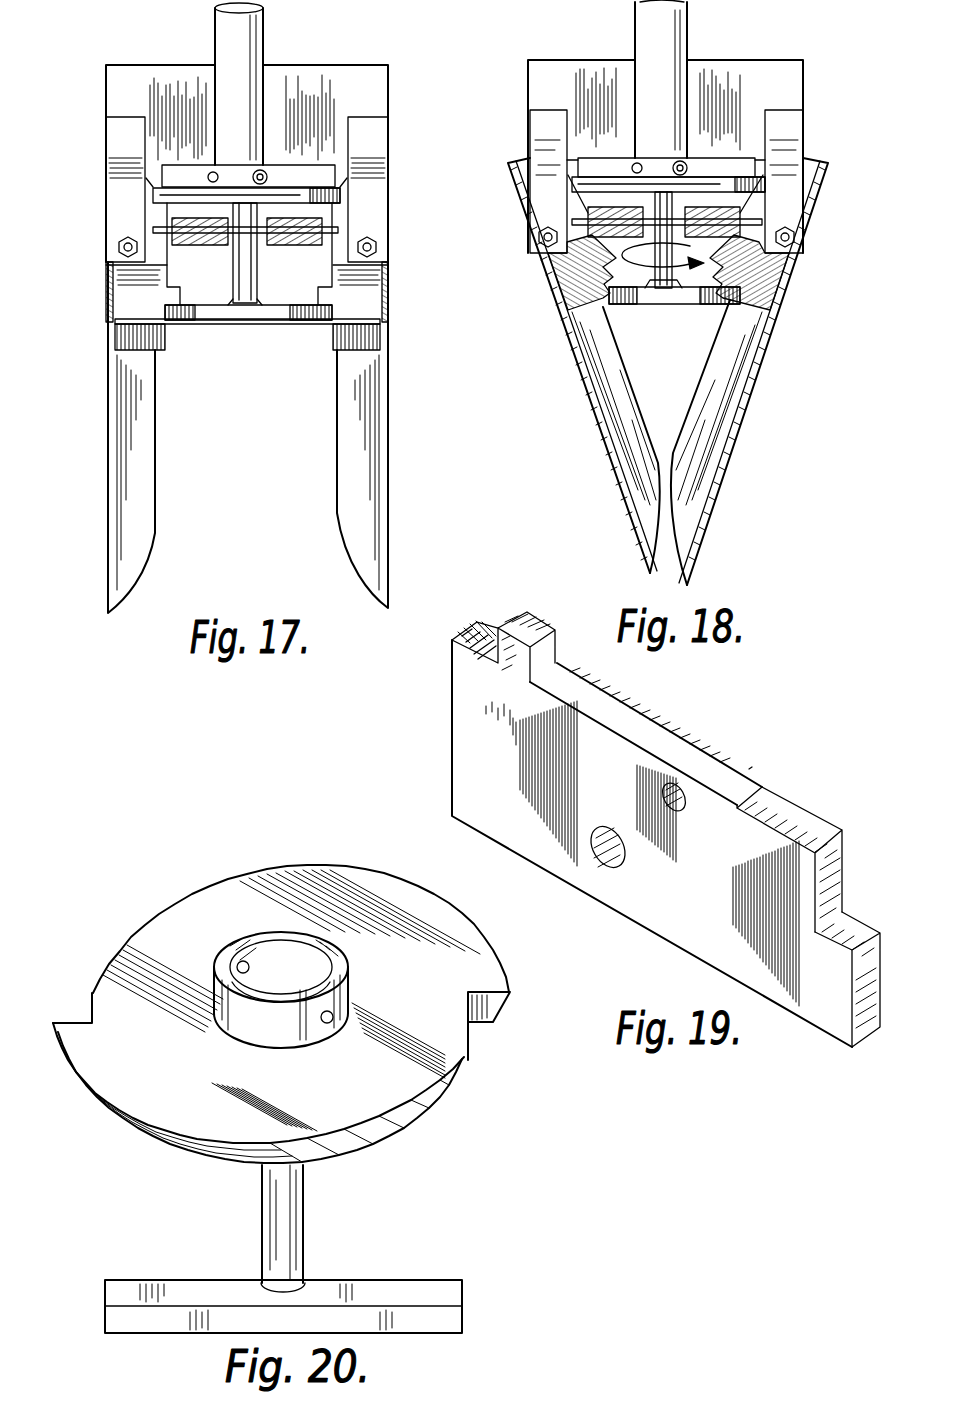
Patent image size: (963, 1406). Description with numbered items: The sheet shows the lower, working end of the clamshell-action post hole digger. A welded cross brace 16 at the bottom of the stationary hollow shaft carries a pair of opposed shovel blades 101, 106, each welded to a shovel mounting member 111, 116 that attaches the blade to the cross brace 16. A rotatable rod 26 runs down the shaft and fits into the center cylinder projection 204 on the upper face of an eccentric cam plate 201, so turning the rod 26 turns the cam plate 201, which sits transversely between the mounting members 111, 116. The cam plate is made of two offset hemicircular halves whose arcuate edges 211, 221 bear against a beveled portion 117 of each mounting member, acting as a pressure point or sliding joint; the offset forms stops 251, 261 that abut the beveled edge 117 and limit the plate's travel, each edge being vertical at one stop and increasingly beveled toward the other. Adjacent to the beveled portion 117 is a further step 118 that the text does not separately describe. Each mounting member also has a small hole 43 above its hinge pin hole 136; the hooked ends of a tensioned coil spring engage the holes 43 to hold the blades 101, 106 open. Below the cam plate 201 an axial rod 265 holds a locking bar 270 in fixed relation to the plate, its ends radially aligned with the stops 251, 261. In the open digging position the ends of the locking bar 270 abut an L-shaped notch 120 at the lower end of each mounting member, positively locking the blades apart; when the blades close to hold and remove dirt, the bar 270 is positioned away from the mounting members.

In FIG. 17, the welded cross brace 16 is at (106, 78).
In FIG. 18, the welded cross brace 16 is at (665, 156).
In FIG. 17, the rotatable rod 26 is at (215, 20).
In FIG. 18, the rotatable rod 26 is at (661, 79).
In FIG. 17, the center cylinder projection 204 is at (240, 176).
In FIG. 18, the center cylinder projection 204 is at (666, 167).
In FIG. 20, the center cylinder projection 204 is at (230, 943).
In FIG. 17, the eccentric cam plate 201 is at (305, 192).
In FIG. 18, the eccentric cam plate 201 is at (755, 160).
In FIG. 20, the eccentric cam plate 201 is at (286, 1008).
In FIG. 17, the axial rod 265 is at (246, 304).
In FIG. 18, the axial rod 265 is at (667, 240).
In FIG. 20, the axial rod 265 is at (262, 1228).
In FIG. 17, the L-shaped notch 120 is at (333, 310).
In FIG. 18, the L-shaped notch 120 is at (740, 300).
In FIG. 19, the L-shaped notch 120 is at (475, 600).
In FIG. 17, the locking bar 270 is at (305, 324).
In FIG. 18, the locking bar 270 is at (695, 303).
In FIG. 20, the locking bar 270 is at (462, 1305).
In FIG. 17, the shovel blade 101 is at (108, 520).
In FIG. 18, the shovel blade 101 is at (630, 525).
In FIG. 17, the shovel blade 106 is at (390, 498).
In FIG. 18, the shovel blade 106 is at (700, 530).
In FIG. 18, the shovel mounting member 111 is at (520, 200).
In FIG. 19, the shovel mounting member 111 is at (652, 829).
In FIG. 18, the shovel mounting member 116 is at (805, 182).
In FIG. 19, the shovel mounting member 116 is at (752, 767).
In FIG. 19, the small hole 43 is at (672, 785).
In FIG. 19, the beveled portion 117 is at (808, 824).
In FIG. 19, the lower shoulder 118 is at (850, 931).
In FIG. 19, the hinge pin hole 136 is at (600, 870).
In FIG. 20, the arcuate edge 221 is at (347, 868).
In FIG. 20, the arcuate edge 211 is at (315, 1145).
In FIG. 20, the stop 261 is at (73, 1022).
In FIG. 20, the stop 251 is at (490, 1025).